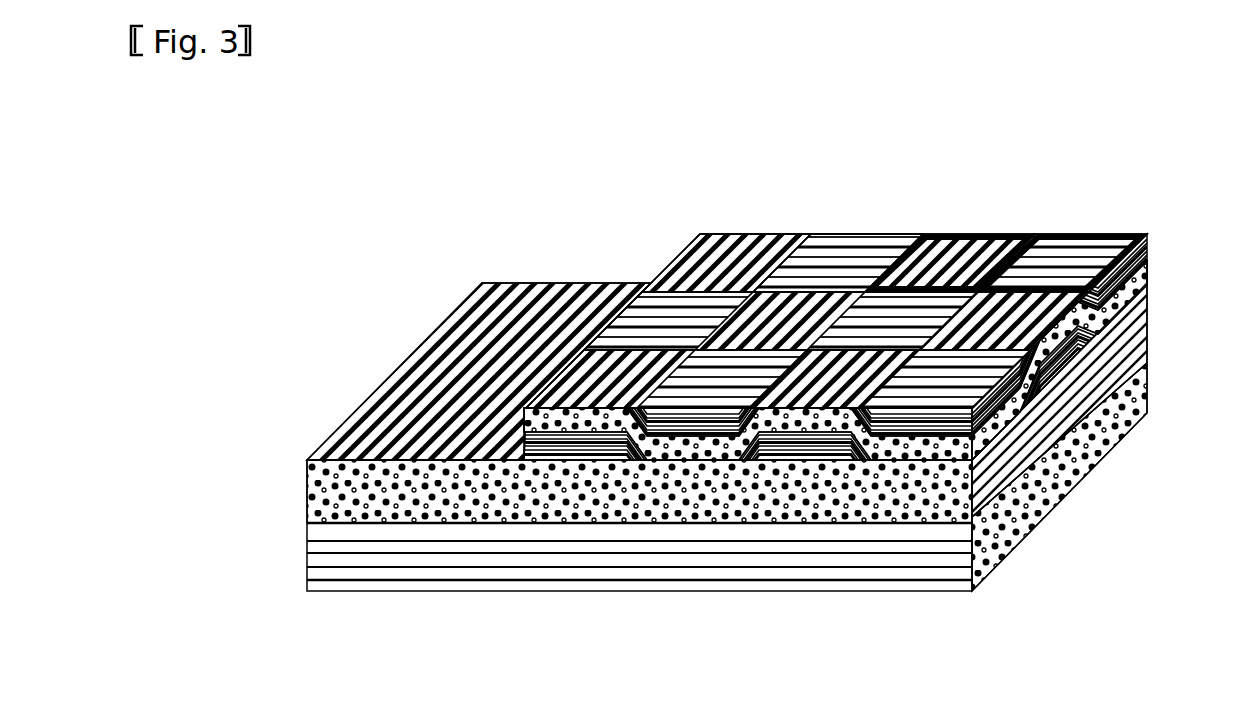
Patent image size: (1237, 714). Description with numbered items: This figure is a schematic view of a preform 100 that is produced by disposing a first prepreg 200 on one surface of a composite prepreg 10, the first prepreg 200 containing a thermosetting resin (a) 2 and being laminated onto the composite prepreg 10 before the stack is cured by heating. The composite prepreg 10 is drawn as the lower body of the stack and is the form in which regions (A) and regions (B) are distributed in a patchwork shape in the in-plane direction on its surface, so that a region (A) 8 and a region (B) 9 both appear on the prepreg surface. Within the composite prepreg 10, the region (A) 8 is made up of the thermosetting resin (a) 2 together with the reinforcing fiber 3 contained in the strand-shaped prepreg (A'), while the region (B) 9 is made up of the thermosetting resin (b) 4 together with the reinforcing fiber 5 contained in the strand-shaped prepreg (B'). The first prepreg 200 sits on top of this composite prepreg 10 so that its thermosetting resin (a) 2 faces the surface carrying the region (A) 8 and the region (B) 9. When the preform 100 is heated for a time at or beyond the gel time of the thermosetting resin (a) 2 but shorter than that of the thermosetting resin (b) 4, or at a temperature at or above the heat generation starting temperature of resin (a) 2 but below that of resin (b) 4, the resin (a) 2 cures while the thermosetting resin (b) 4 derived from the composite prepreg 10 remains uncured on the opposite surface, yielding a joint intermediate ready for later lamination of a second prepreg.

The preform 100 is at (726, 315).
The first prepreg 200 is at (225, 444).
The thermosetting resin (a) 2 is at (305, 462).
The reinforcing fiber contained in strand-shaped prepreg (A') 3 is at (305, 497).
The thermosetting resin (b) 4 is at (825, 235).
The reinforcing fiber contained in strand-shaped prepreg (B') 5 is at (872, 235).
The region (A) on prepreg surface 8 is at (1032, 221).
The region (B) on prepreg surface 9 is at (1145, 221).
The composite prepreg 10 is at (1153, 236).